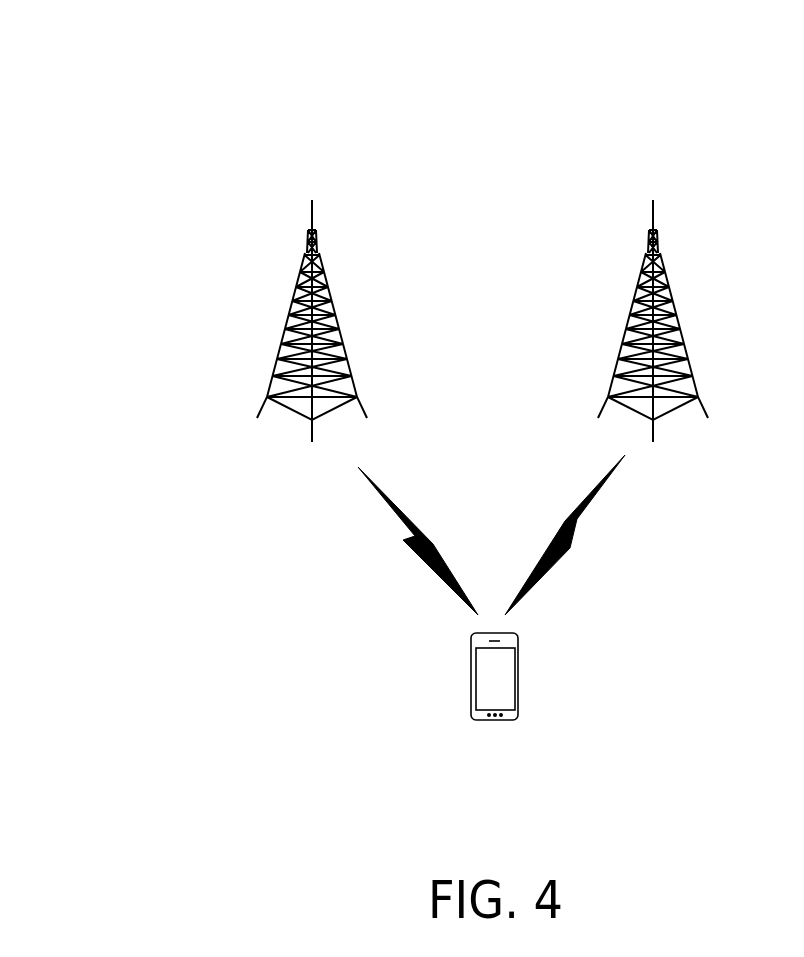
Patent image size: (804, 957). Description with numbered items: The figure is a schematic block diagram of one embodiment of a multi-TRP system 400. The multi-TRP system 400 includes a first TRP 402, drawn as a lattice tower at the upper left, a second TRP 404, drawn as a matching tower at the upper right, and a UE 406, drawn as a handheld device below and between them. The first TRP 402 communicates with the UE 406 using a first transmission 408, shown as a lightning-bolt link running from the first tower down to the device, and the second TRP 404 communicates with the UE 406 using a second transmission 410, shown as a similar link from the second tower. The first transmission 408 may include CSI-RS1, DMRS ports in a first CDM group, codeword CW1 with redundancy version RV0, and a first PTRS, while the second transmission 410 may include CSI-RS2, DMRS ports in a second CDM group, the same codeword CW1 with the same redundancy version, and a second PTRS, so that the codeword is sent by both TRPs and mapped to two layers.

The multi-TRP system 400 is at (113, 72).
The first TRP 402 is at (285, 340).
The second TRP 404 is at (680, 340).
The UE 406 is at (471, 672).
The first transmission 408 is at (412, 528).
The second transmission 410 is at (583, 522).